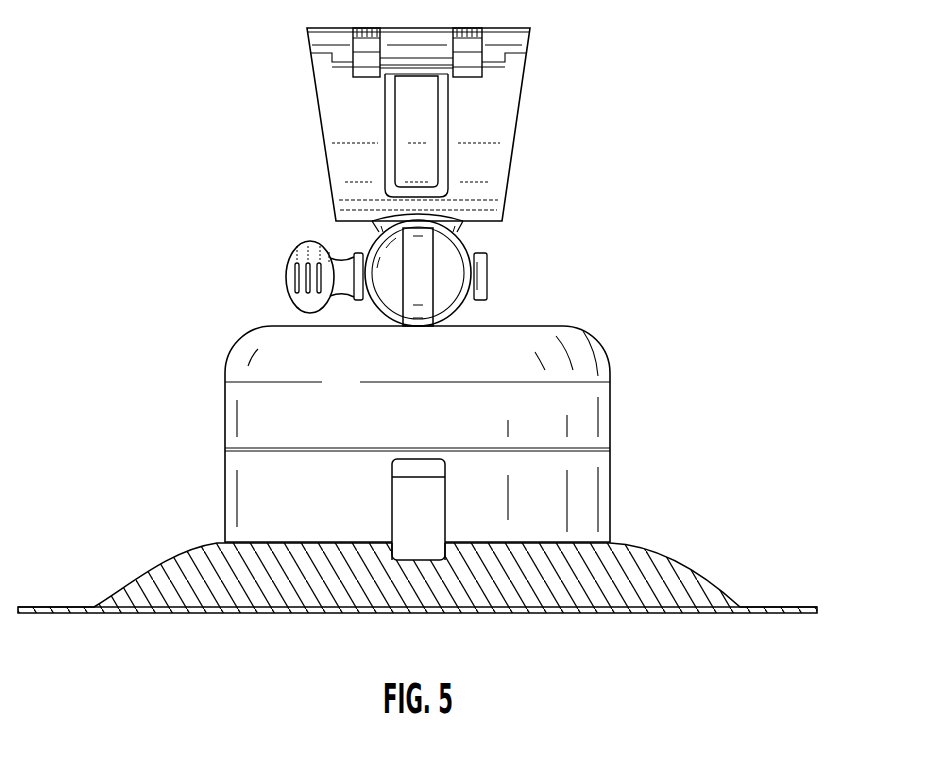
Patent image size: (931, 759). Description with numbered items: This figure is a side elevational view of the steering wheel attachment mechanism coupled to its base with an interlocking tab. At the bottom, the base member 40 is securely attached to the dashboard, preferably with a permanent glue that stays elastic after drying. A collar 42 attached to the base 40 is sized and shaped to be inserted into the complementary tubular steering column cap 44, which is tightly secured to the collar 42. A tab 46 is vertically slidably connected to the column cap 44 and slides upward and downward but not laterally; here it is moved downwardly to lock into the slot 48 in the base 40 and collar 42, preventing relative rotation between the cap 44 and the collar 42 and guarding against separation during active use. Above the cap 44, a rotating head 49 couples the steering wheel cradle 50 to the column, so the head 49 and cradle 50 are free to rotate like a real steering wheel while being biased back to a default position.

The base member 40 is at (702, 587).
The collar 42 is at (590, 512).
The steering column cap 44 is at (611, 400).
The tab 46 is at (458, 486).
The slot 48 is at (425, 561).
The rotating head 49 is at (473, 243).
The steering wheel cradle 50 is at (517, 128).